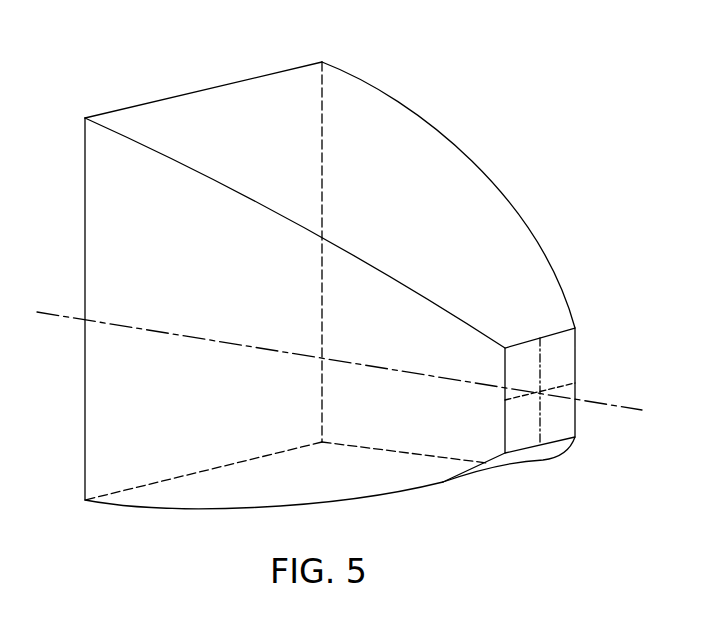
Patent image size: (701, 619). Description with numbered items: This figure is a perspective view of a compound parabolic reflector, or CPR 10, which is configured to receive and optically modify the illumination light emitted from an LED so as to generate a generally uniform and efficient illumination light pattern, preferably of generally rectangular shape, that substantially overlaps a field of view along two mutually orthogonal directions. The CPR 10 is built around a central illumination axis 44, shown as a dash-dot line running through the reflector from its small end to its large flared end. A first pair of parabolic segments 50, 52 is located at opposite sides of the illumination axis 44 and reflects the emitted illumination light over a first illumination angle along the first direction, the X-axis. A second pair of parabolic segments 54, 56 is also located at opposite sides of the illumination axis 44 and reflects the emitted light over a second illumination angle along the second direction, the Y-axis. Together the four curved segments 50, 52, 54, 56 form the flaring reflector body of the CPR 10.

The compound parabolic reflector 10 is at (339, 302).
The illumination axis 44 is at (613, 404).
The parabolic segment 50 is at (485, 193).
The parabolic segment 52 is at (410, 492).
The parabolic segment 54 is at (103, 410).
The parabolic segment 56 is at (573, 312).